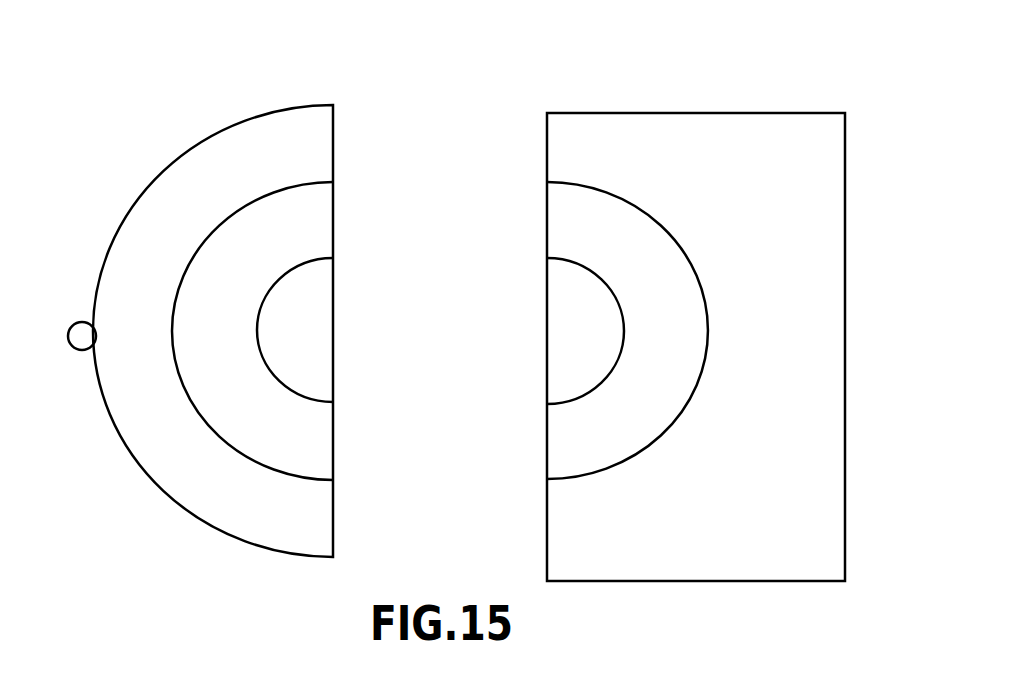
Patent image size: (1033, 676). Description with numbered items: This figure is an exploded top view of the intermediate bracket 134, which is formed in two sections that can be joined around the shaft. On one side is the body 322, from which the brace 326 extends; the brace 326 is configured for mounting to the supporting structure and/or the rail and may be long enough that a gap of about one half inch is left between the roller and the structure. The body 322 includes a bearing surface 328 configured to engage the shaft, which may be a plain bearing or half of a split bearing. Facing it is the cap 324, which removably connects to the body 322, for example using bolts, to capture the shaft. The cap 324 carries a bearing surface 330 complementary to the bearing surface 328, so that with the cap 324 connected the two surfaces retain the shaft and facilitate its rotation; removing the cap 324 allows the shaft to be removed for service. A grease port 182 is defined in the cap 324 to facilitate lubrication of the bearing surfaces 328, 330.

The intermediate bracket 134 is at (907, 72).
The grease port 182 is at (75, 322).
The body 322 is at (600, 442).
The cap 324 is at (207, 390).
The brace 326 is at (815, 253).
The bearing surface 328 is at (610, 373).
The bearing surface 330 is at (262, 305).